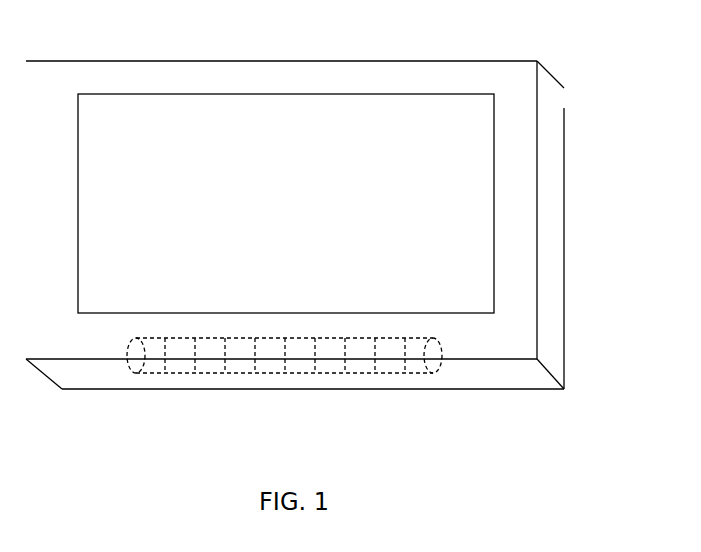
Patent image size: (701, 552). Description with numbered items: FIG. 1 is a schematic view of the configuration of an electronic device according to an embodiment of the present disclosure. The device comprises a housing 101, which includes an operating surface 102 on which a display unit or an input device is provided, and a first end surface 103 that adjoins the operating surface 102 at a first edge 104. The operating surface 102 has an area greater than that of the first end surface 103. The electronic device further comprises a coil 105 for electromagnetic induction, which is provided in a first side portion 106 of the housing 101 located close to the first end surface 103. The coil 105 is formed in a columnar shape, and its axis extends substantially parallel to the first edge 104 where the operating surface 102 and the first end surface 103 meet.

The housing 101 is at (547, 117).
The operating surface 102 is at (508, 87).
The first end surface 103 is at (510, 370).
The first edge 104 is at (497, 360).
The coil 105 is at (305, 373).
The first side portion 106 is at (433, 325).